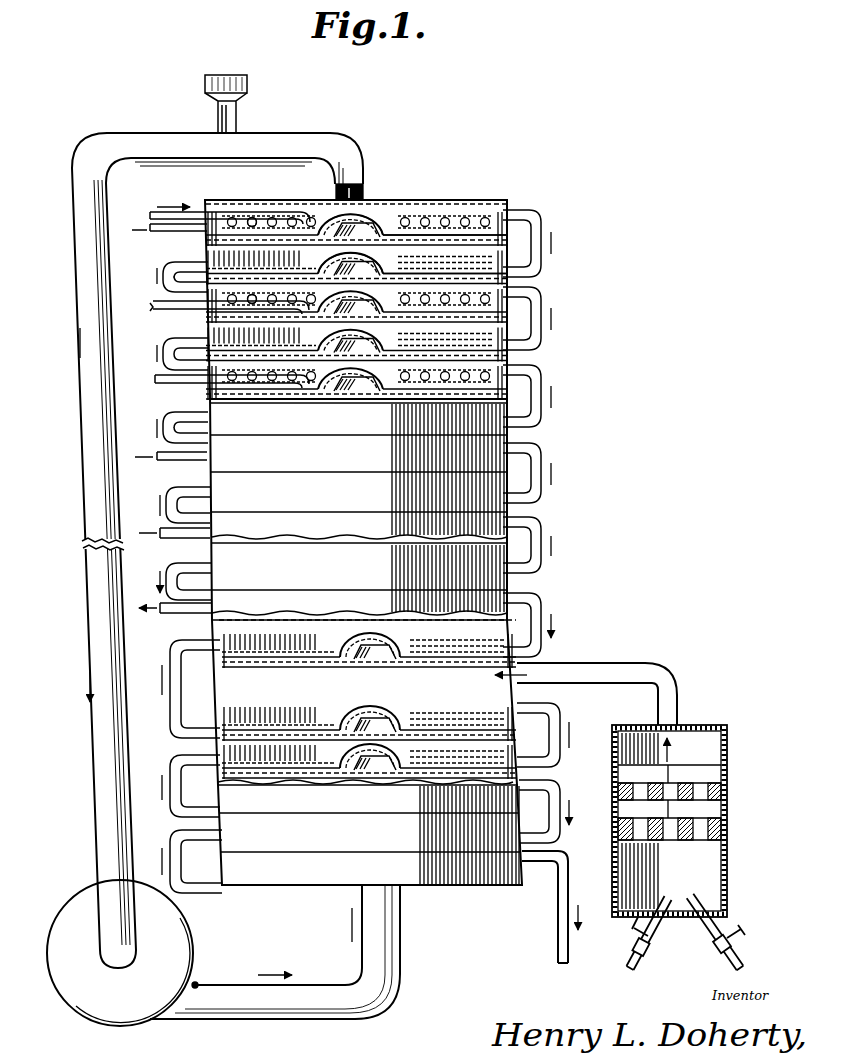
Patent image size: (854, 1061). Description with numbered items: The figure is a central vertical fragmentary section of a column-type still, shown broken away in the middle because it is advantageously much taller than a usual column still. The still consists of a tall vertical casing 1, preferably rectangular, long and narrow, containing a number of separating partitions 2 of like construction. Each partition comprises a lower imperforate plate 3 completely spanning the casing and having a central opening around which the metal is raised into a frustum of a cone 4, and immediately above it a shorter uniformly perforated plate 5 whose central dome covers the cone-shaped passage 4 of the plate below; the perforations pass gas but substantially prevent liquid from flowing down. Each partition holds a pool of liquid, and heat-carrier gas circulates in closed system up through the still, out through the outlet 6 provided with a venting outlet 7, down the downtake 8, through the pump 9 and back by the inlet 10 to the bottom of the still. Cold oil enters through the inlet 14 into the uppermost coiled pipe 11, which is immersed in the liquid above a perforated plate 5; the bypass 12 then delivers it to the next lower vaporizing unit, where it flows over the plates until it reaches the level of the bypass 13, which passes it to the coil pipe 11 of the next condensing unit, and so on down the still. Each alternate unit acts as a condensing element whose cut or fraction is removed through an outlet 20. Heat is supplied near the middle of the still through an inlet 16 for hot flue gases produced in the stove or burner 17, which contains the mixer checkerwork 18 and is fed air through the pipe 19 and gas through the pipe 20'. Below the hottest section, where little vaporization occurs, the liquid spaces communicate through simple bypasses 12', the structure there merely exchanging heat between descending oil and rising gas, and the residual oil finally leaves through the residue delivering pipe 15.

The casing 1 is at (513, 433).
The separating partitions 2 is at (475, 322).
The lower imperforate plate 3 is at (507, 397).
The frustum of a cone 4 is at (354, 264).
The perforated plate 5 is at (428, 262).
The outlet 6 is at (355, 152).
The venting outlet 7 is at (248, 92).
The downtake 8 is at (74, 255).
The pump 9 is at (136, 1003).
The inlet 10 is at (306, 1004).
The coiled pipe 11 is at (258, 218).
The bypass 12 is at (550, 421).
The simple bypasses 12' is at (366, 790).
The bypass 13 is at (162, 279).
The inlet 14 is at (150, 215).
The residue delivering pipe 15 is at (557, 922).
The inlet 16 is at (611, 672).
The stove or burner 17 is at (724, 731).
The mixer checkerwork 18 is at (722, 790).
The air pipe 19 is at (648, 937).
The outlet 20 is at (214, 418).
The gas pipe 20' is at (733, 932).